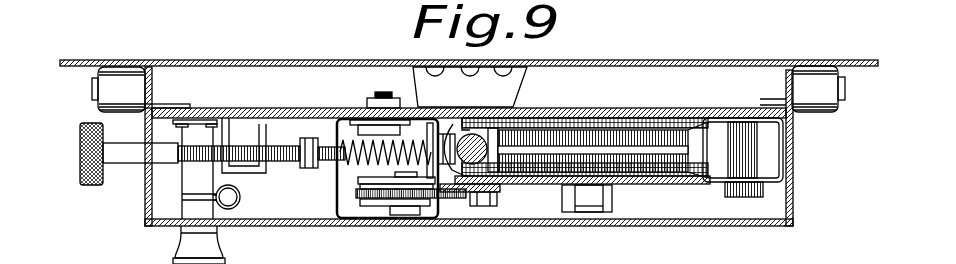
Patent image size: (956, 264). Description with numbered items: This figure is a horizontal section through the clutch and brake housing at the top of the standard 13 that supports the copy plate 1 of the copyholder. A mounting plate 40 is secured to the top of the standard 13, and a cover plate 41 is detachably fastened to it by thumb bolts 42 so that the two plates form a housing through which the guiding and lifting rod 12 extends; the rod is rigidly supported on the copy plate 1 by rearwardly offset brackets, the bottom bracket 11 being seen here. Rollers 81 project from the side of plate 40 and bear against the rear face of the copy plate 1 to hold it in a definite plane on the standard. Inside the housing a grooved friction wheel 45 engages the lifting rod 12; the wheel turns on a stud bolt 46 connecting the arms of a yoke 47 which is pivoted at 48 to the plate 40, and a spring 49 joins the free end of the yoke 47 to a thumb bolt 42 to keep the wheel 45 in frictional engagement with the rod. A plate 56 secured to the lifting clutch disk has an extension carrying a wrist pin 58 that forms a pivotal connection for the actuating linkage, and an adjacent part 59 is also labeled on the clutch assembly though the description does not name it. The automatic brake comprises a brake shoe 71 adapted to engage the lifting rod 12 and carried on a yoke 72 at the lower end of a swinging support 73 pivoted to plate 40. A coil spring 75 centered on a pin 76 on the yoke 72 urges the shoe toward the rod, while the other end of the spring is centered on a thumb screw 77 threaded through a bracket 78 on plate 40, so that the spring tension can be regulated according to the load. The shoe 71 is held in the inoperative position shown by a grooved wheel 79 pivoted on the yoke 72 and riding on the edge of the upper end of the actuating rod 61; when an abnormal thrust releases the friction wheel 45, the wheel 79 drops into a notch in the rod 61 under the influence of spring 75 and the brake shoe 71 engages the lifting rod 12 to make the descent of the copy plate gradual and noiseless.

The copy plate 1 is at (232, 59).
The rollers 81 is at (135, 77).
The mounting plate 40 is at (199, 108).
The cover plate 41 is at (794, 176).
The standard 13 is at (337, 188).
The thumb screw 77 is at (276, 140).
The bracket 78 is at (257, 172).
The thumb bolts 42 is at (186, 212).
The spring 49 is at (238, 196).
The swinging support 73 is at (362, 118).
The coil spring 75 is at (360, 120).
The pin 76 is at (418, 118).
The brake shoe 71 is at (458, 137).
The bottom bracket 11 is at (523, 89).
The lifting rod 12 is at (486, 124).
The friction wheel 45 is at (643, 140).
The lower flange band 59 is at (512, 170).
The plate 56 is at (668, 178).
The actuating rod 61 is at (468, 196).
The wrist pin 58 is at (498, 202).
The yoke 72 is at (438, 196).
The grooved wheel 79 is at (378, 199).
The stud bolt 46 is at (612, 197).
The yoke 47 is at (689, 187).
The pivot 48 is at (738, 190).